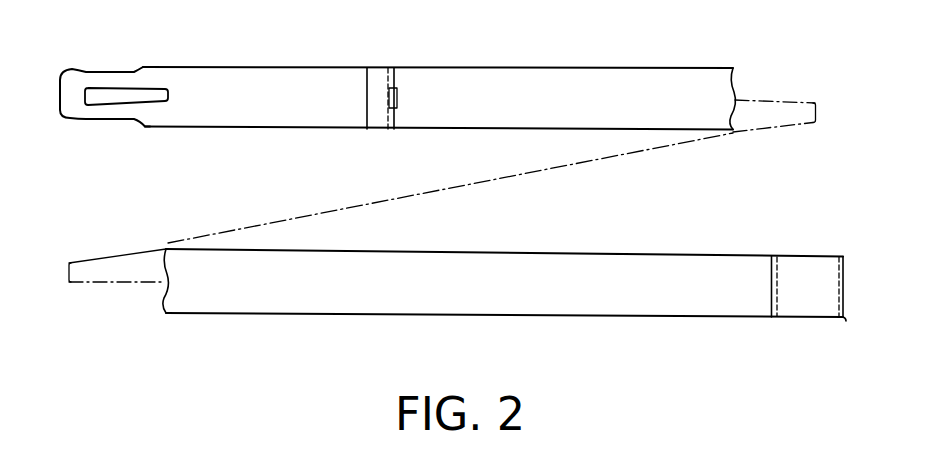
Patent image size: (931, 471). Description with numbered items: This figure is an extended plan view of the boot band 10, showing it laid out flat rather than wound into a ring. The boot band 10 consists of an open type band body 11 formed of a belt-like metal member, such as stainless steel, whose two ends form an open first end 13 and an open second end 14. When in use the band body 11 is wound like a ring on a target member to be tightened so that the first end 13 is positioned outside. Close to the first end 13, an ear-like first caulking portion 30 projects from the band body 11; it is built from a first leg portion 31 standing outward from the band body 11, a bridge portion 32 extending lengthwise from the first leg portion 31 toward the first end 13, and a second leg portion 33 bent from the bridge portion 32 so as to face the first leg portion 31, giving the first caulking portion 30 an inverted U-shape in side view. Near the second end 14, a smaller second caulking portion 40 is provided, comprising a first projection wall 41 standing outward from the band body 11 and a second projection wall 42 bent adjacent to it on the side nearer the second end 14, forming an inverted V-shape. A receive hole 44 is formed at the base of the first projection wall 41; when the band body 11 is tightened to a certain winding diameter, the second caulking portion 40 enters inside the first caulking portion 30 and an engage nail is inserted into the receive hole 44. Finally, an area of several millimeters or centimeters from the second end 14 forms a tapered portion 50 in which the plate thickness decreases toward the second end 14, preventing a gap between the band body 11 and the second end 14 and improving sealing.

The boot band 10 is at (812, 74).
The band body 11 is at (475, 298).
The first end 13 is at (845, 322).
The second end 14 is at (57, 78).
The first caulking portion 30 is at (770, 254).
The first leg portion 31 is at (770, 287).
The bridge portion 32 is at (808, 277).
The second leg portion 33 is at (845, 282).
The second caulking portion 40 is at (394, 93).
The first projection wall 41 is at (395, 82).
The second projection wall 42 is at (367, 90).
The receive hole 44 is at (398, 96).
The tapered portion 50 is at (120, 80).